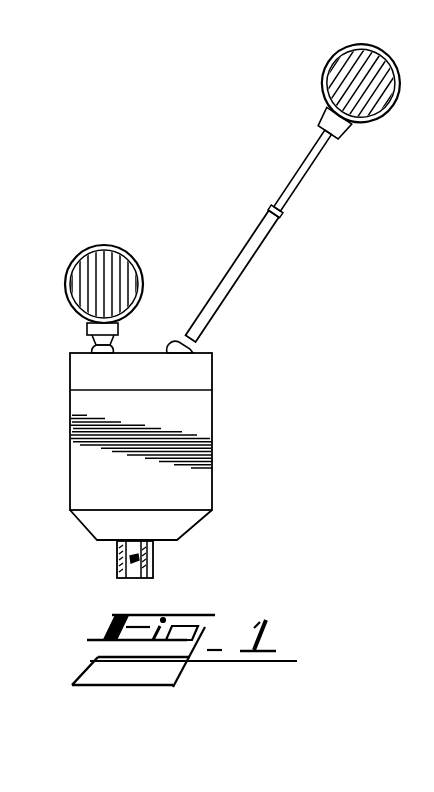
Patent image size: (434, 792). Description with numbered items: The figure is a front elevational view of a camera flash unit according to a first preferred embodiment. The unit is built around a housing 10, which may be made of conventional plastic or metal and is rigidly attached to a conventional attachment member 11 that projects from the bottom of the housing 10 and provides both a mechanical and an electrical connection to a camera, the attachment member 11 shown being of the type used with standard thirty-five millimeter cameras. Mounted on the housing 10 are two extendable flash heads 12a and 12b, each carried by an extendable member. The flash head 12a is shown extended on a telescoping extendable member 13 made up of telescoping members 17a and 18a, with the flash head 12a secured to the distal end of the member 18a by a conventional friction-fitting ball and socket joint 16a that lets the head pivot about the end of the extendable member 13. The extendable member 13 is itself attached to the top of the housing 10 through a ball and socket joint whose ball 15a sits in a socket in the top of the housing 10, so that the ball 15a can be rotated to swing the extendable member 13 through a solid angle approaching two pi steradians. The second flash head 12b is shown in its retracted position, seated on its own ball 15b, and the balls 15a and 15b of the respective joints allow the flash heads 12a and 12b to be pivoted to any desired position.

The housing 10 is at (212, 423).
The attachment member 11 is at (153, 563).
The flash head 12a is at (328, 62).
The flash head 12b is at (113, 248).
The extendable member 13 is at (252, 162).
The ball 15a is at (168, 345).
The ball 15b is at (92, 346).
The ball and socket joint 16a is at (326, 123).
The telescoping member 17a is at (251, 250).
The telescoping member 18a is at (287, 189).